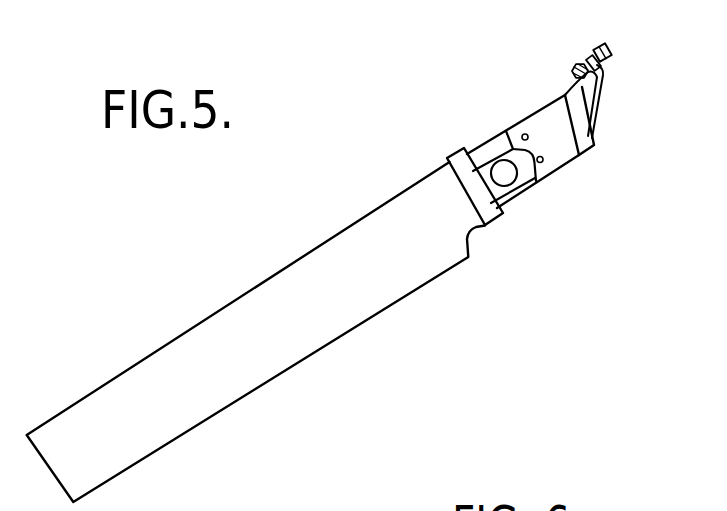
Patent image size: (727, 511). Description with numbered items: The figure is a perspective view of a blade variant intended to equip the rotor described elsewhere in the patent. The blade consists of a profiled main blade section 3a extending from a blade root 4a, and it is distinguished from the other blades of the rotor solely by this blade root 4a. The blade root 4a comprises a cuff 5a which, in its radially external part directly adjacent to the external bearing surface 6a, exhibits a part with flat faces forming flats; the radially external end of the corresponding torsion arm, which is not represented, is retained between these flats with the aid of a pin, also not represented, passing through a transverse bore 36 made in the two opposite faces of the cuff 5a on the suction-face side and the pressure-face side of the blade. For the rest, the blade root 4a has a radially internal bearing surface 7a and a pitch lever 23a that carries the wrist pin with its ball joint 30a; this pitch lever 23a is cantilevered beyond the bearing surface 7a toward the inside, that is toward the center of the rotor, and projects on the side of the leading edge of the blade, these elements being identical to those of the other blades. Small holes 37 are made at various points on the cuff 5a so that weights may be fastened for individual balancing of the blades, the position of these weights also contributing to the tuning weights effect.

The profiled main blade section 3a is at (88, 457).
The blade root 4a is at (548, 135).
The cuff 5a is at (496, 152).
The external bearing surface 6a is at (473, 188).
The radially internal bearing surface 7a is at (576, 131).
The pitch lever 23a is at (590, 92).
The ball joint 30a is at (598, 45).
The transverse bore 36 is at (506, 175).
The small holes 37 is at (543, 161).